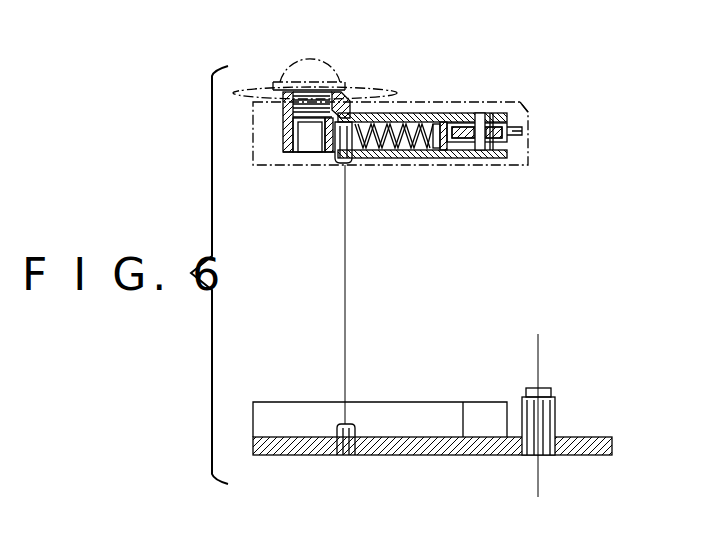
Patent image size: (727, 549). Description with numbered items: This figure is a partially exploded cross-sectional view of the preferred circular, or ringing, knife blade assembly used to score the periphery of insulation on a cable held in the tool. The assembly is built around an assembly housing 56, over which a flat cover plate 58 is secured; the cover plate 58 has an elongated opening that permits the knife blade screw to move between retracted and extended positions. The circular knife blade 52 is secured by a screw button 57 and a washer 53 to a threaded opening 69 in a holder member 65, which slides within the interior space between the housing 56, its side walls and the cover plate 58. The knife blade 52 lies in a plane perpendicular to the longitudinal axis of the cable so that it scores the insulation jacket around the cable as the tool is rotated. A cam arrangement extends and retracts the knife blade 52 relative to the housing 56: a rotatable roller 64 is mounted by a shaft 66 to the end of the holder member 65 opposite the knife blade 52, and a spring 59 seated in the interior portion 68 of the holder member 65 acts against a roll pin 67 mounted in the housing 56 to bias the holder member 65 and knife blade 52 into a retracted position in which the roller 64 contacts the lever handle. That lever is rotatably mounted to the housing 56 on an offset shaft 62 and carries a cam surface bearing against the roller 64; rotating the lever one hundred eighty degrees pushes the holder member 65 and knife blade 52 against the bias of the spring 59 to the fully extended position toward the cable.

The circular knife blade 52 is at (374, 92).
The washer 53 is at (277, 82).
The assembly housing 56 is at (432, 457).
The screw button 57 is at (310, 64).
The cover plate 58 is at (501, 104).
The spring 59 is at (381, 150).
The offset shaft 62 is at (546, 392).
The roller 64 is at (521, 130).
The holder member 65 is at (461, 113).
The shaft 66 is at (481, 150).
The roll pin 67 is at (341, 158).
The interior portion 68 is at (417, 114).
The threaded opening 69 is at (302, 140).